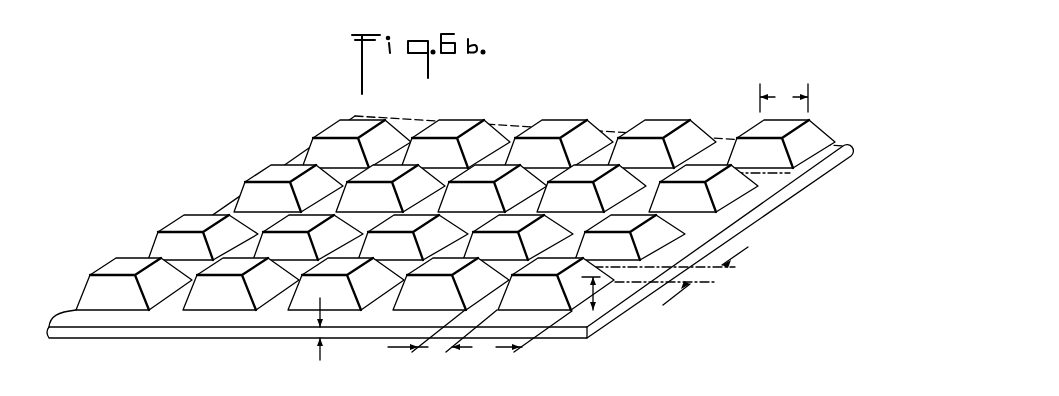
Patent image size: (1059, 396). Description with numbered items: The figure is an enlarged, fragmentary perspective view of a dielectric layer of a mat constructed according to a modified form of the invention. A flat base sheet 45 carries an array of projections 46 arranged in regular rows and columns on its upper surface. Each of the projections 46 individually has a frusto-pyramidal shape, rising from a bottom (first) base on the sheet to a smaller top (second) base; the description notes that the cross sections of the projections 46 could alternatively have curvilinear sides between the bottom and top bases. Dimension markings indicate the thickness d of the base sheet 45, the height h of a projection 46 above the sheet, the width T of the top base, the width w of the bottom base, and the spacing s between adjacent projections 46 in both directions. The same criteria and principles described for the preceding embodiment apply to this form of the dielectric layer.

The plate 45 is at (203, 338).
The projections 46 is at (186, 223).
The plate thickness dimension d is at (318, 341).
The projection height dimension h is at (591, 293).
The projection top width dimension T is at (784, 98).
The projection base width dimension w is at (509, 334).
The projection spacing dimension s is at (568, 302).